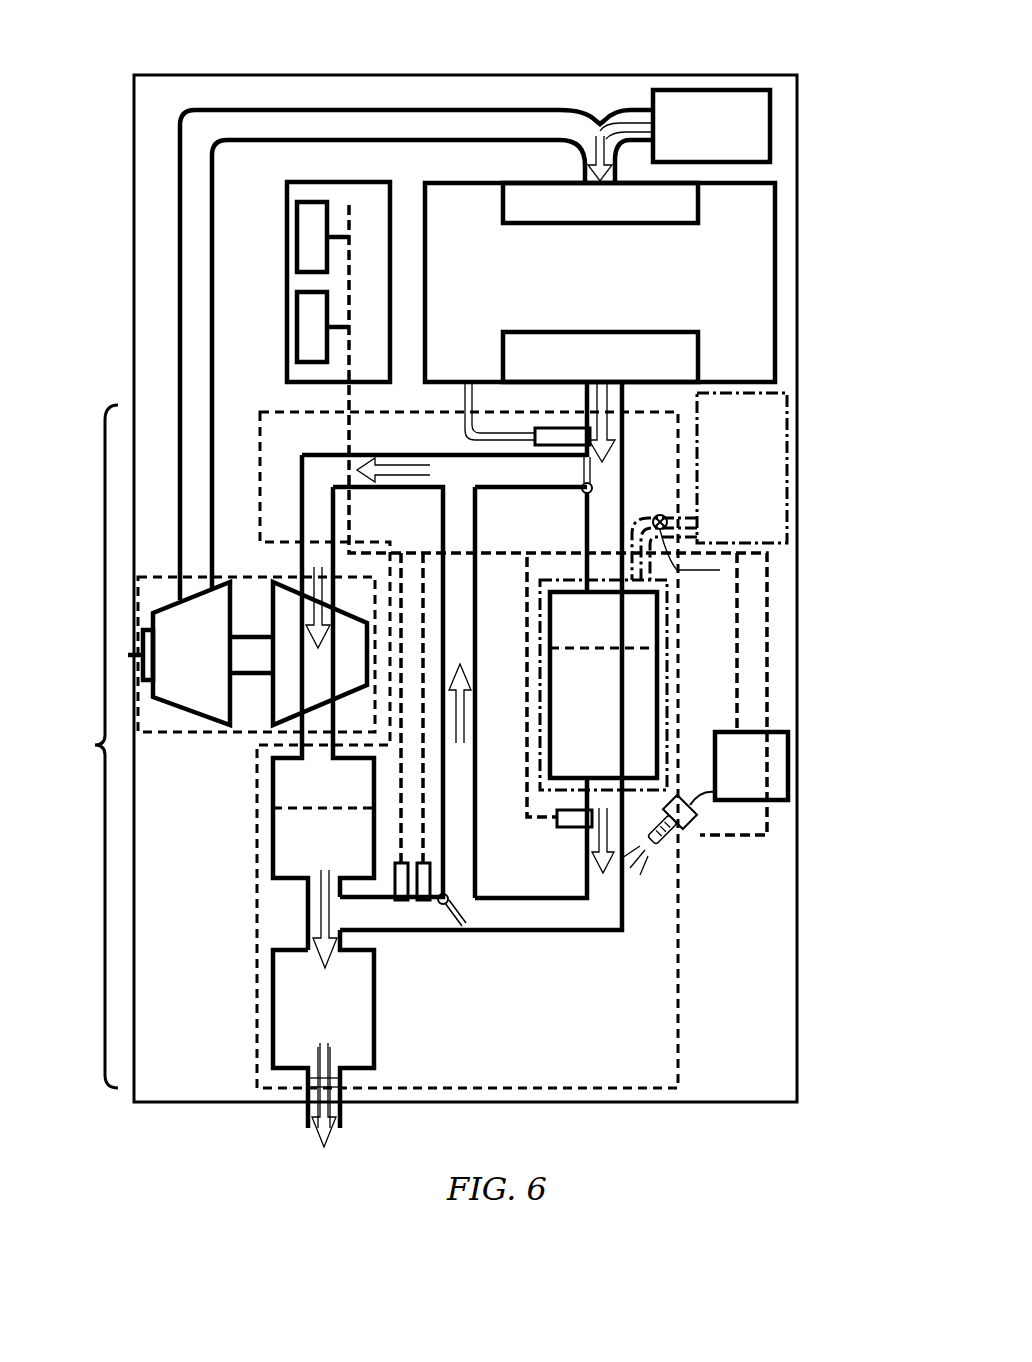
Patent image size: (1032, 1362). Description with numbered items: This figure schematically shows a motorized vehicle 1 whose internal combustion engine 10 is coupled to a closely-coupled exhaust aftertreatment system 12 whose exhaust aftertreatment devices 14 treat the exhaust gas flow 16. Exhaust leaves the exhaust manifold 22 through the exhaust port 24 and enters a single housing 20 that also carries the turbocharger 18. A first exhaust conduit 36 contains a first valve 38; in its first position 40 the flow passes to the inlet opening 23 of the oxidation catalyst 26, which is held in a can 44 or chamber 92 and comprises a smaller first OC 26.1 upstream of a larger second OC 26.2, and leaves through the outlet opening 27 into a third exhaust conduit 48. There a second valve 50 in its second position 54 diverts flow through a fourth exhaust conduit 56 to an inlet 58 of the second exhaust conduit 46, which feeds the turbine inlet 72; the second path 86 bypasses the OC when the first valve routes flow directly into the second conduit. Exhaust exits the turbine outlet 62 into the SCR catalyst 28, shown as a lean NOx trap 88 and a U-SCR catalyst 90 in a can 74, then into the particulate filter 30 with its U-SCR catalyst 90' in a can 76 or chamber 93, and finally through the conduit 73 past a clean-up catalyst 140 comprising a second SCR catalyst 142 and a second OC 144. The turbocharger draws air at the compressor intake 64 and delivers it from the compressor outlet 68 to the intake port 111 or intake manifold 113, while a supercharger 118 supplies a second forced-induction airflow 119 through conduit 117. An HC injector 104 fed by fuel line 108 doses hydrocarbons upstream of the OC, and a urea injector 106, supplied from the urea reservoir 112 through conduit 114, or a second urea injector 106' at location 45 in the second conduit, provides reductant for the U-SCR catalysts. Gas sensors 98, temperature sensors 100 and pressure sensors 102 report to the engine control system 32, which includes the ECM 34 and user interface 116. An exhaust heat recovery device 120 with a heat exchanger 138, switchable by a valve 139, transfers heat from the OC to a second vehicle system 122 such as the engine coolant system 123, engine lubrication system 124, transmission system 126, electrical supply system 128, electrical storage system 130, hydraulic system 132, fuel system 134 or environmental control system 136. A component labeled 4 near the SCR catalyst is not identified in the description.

The motorized vehicle 1 is at (592, 68).
The filter housing 4 is at (298, 814).
The internal combustion engine 10 is at (785, 250).
The exhaust aftertreatment system 12 is at (700, 418).
The exhaust aftertreatment devices 14 is at (464, 849).
The exhaust gas flow 16 is at (625, 392).
The turbocharger 18 is at (165, 568).
The housing 20 is at (680, 1017).
The exhaust manifold 22 is at (600, 330).
The inlet opening 23 is at (598, 598).
The exhaust port 24 is at (615, 380).
The oxidation catalyst 26 is at (672, 698).
The first OC 26.1 is at (567, 625).
The second OC 26.2 is at (660, 630).
The outlet opening 27 is at (600, 776).
The SCR catalyst 28 is at (280, 784).
The particulate filter 30 is at (262, 982).
The engine control system 32 is at (287, 278).
The electronic engine control module 34 is at (297, 320).
The first exhaust conduit 36 is at (607, 514).
The first valve 38 is at (594, 491).
The first position 40 is at (590, 470).
The can 44 is at (660, 663).
The location 45 is at (393, 489).
The second exhaust conduit 46 is at (530, 482).
The third exhaust conduit 48 is at (527, 915).
The second valve 50 is at (447, 895).
The second position 54 is at (460, 918).
The fourth exhaust conduit 56 is at (466, 640).
The inlet 58 is at (463, 495).
The turbine outlet 62 is at (300, 705).
The compressor intake 64 is at (141, 652).
The compressor outlet 68 is at (195, 590).
The turbine inlet 72 is at (300, 600).
The conduit 73 is at (335, 1110).
The can 74 is at (370, 842).
The can 76 is at (330, 1060).
The second path 86 is at (86, 746).
The lean NOx trap 88 is at (262, 798).
The U-SCR catalyst 90 is at (238, 888).
The U-SCR catalyst 90' is at (235, 1065).
The chamber 92 is at (282, 868).
The chamber 93 is at (283, 1010).
The gas sensors 98 is at (423, 902).
The temperature sensors 100 is at (575, 810).
The pressure sensors 102 is at (402, 902).
The HC injector 104 is at (548, 402).
The urea injector 106 is at (674, 861).
The second urea injector 106' is at (382, 504).
The fuel line 108 is at (488, 400).
The intake port 111 is at (610, 194).
The urea reservoir 112 is at (776, 734).
The intake manifold 113 is at (563, 224).
The conduit 114 is at (690, 800).
The user interface 116 is at (297, 238).
The conduit 117 is at (623, 118).
The supercharger 118 is at (778, 98).
The second forced-induction airflow 119 is at (635, 125).
The exhaust heat recovery device 120 is at (658, 662).
The second vehicle system 122 is at (790, 432).
The engine coolant system 123 is at (721, 438).
The engine lubrication system 124 is at (721, 462).
The transmission system 126 is at (721, 492).
The electrical supply system 128 is at (721, 522).
The electrical storage system 130 is at (767, 422).
The hydraulic system 132 is at (767, 452).
The fuel system 134 is at (767, 482).
The environmental control system 136 is at (767, 512).
The heat exchanger 138 is at (664, 630).
The valve 139 is at (720, 570).
The clean-up catalyst 140 is at (303, 1072).
The second SCR catalyst 142 is at (310, 1085).
The second OC 144 is at (313, 1093).